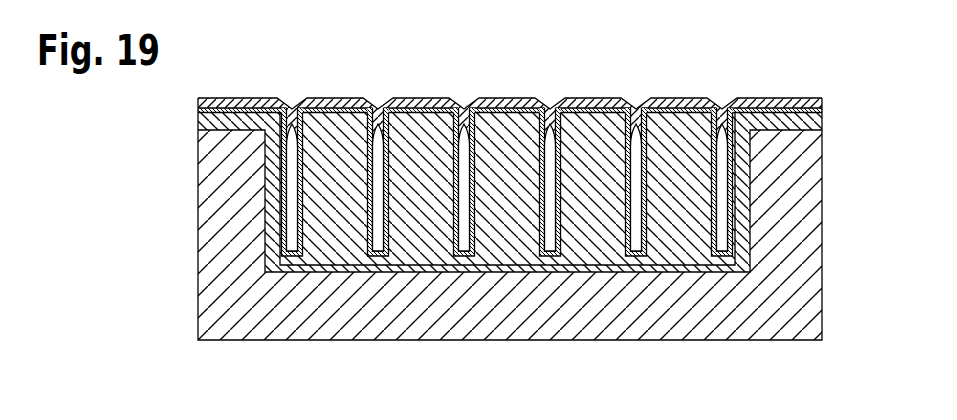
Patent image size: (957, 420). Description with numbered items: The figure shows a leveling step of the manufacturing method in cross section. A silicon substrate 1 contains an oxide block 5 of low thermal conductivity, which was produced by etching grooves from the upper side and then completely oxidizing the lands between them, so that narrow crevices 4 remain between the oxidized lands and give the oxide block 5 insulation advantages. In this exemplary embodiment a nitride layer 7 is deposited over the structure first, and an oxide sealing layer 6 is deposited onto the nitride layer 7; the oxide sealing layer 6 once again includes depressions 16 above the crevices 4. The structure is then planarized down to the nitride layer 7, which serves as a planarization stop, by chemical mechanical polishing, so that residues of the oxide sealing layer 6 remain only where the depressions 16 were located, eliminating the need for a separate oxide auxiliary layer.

The silicon substrate 1 is at (803, 228).
The crevice 4 is at (378, 102).
The oxide block 5 is at (506, 232).
The oxide sealing layer 6 is at (497, 103).
The nitride layer 7 is at (688, 100).
The depressions 16 is at (551, 93).